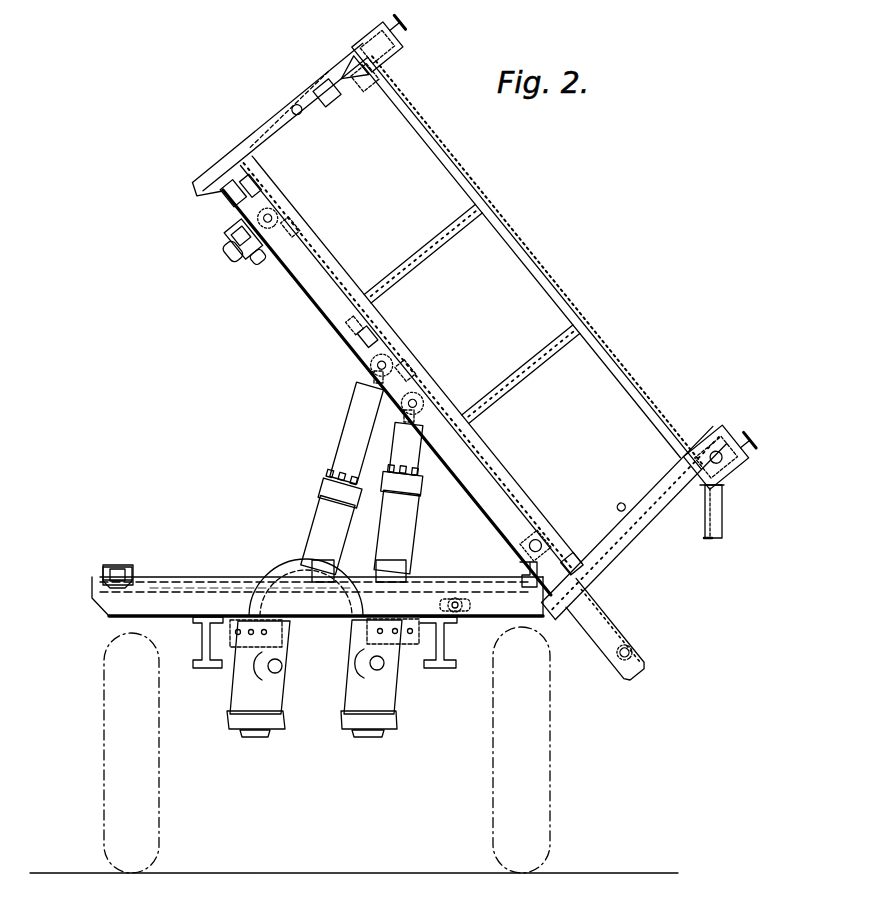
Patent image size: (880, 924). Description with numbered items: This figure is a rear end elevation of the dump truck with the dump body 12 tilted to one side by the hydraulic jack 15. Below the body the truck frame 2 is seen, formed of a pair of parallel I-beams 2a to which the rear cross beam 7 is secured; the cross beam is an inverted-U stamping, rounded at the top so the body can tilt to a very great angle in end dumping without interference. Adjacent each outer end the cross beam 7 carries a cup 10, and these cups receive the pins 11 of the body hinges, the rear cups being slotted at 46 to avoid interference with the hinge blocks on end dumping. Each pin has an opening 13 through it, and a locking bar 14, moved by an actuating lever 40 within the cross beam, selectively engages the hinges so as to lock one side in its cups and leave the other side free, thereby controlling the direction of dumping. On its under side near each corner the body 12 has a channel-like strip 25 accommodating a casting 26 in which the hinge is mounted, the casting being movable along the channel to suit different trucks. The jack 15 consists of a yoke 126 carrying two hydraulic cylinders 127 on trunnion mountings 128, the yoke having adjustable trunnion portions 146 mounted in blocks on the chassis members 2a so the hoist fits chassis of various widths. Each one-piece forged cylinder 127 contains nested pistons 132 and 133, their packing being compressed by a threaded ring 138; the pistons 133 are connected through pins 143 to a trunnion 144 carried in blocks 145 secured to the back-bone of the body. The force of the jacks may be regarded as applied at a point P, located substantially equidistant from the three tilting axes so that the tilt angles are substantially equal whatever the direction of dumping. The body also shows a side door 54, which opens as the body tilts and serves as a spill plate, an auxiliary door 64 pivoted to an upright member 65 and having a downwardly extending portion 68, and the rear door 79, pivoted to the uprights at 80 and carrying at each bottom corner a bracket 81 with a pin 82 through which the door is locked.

The frame member 2 is at (180, 557).
The I-beam 2a is at (205, 670).
The cross beam 7 is at (120, 604).
The cup 10 is at (102, 573).
The pin 11 is at (247, 244).
The dump body 12 is at (497, 358).
The opening 13 is at (232, 251).
The locking bar 14 is at (220, 580).
The hydraulic jack 15 is at (366, 476).
The channel-like strip 25 is at (290, 227).
The casting 26 is at (268, 218).
The actuating lever 40 is at (456, 597).
The slot 46 is at (112, 566).
The side door 54 is at (601, 630).
The auxiliary door 64 is at (722, 506).
The upright member 65 is at (634, 522).
The downwardly extending portion 68 is at (712, 541).
The rear door 79 is at (496, 315).
The pivot 80 is at (555, 248).
The bracket 81 is at (412, 373).
The pin 82 is at (385, 369).
The point of force application P is at (405, 371).
The yoke 126 is at (300, 572).
The hydraulic cylinder 127 is at (252, 711).
The trunnion mounting 128 is at (372, 669).
The piston 132 is at (425, 540).
The piston 133 is at (342, 440).
The threaded ring 138 is at (319, 489).
The pin 143 is at (397, 384).
The trunnion 144 is at (367, 337).
The block 145 is at (355, 325).
The adjustable trunnion portion 146 is at (228, 636).